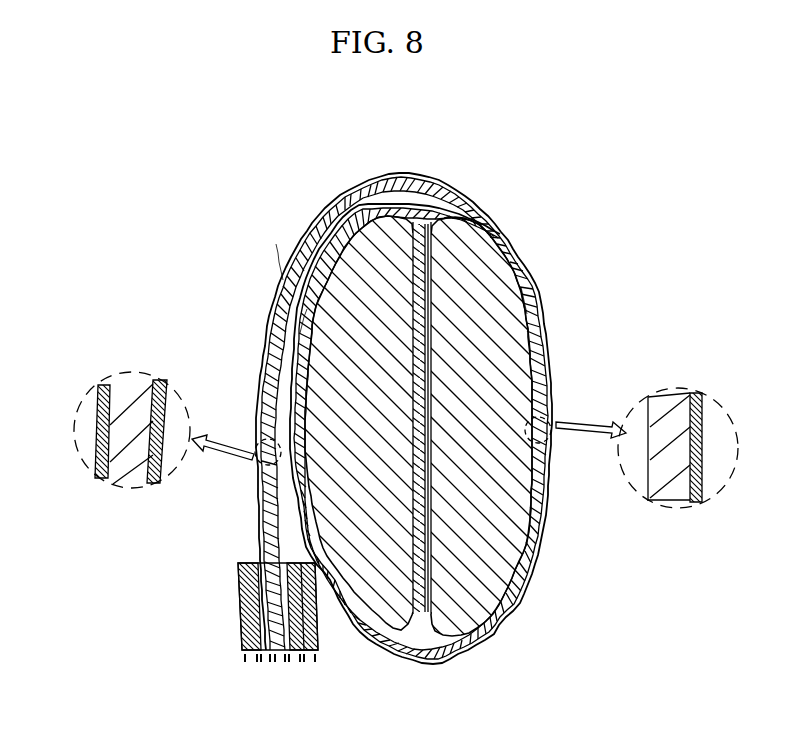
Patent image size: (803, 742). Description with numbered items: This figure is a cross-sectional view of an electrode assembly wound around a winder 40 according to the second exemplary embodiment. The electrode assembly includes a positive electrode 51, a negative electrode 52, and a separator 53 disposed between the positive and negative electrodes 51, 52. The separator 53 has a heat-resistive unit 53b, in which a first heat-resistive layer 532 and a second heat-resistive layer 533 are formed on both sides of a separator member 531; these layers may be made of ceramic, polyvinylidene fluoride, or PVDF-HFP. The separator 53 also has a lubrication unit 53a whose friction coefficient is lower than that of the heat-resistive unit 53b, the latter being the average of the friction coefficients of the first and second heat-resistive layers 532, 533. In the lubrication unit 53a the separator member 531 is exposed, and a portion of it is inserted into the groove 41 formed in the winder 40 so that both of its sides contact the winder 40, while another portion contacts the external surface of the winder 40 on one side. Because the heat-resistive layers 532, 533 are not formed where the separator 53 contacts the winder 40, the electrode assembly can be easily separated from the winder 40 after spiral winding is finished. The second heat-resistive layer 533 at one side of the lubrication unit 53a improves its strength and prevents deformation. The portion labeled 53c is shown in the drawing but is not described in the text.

The winder 40 is at (508, 334).
The groove 41 is at (417, 633).
The positive electrode 51 is at (316, 637).
The negative electrode 52 is at (238, 618).
The separator 53 is at (90, 416).
The lubrication unit 53a is at (412, 348).
The heat-resistive unit 53b is at (520, 286).
The tape lead portion 53c is at (283, 280).
The separator member 531 is at (128, 480).
The first heat-resistive layer 532 is at (100, 452).
The second heat-resistive layer 533 is at (162, 470).